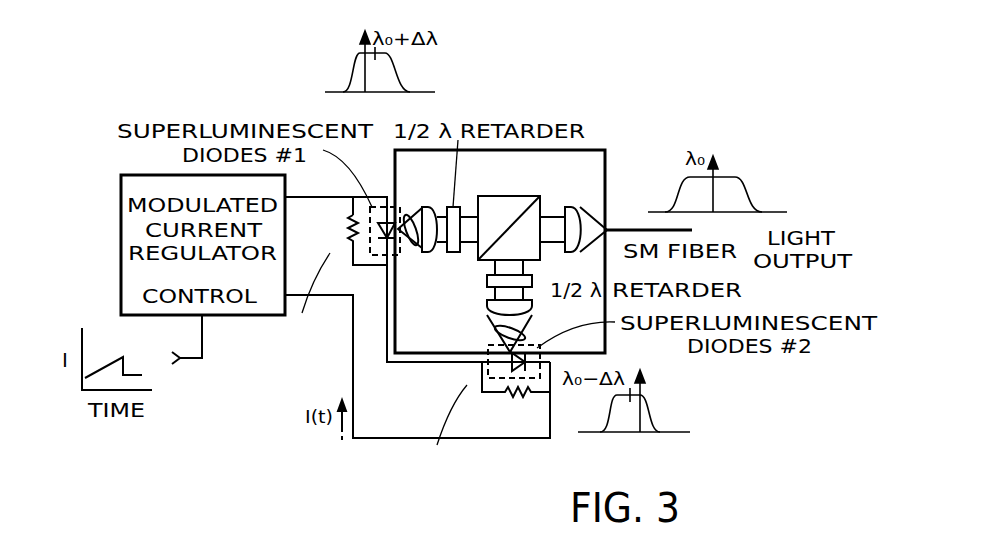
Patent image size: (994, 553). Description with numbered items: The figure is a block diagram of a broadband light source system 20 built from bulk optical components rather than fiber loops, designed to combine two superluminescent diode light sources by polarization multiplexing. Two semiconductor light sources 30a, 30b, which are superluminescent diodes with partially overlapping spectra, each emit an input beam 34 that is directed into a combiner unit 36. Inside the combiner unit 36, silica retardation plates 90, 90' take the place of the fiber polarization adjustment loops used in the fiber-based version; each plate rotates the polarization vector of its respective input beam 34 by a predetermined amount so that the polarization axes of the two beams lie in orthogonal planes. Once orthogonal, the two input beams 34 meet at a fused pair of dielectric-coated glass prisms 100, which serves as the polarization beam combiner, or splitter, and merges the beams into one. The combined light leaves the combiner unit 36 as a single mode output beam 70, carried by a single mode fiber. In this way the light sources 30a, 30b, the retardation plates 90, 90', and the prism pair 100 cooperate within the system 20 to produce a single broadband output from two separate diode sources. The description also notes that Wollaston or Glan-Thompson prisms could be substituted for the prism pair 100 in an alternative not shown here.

The broadband light source system 20 is at (598, 67).
The semiconductor light source 30a is at (270, 397).
The semiconductor light source 30b is at (440, 503).
The input beam 34 is at (407, 220).
The combiner unit 36 is at (597, 172).
The single mode output beam 70 is at (645, 229).
The silica retardation plate 90 is at (434, 247).
The silica retardation plate 90' is at (478, 294).
The fused pair of dielectric-coated glass prisms 100 is at (522, 198).